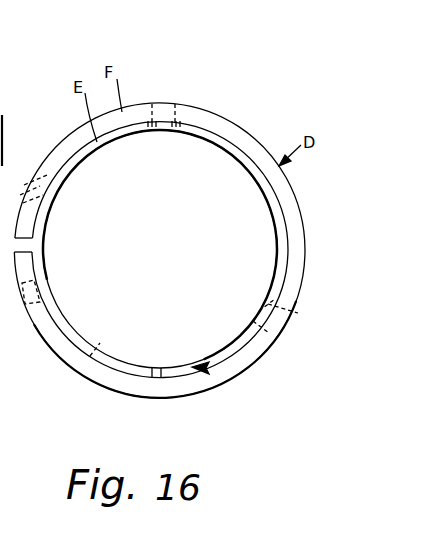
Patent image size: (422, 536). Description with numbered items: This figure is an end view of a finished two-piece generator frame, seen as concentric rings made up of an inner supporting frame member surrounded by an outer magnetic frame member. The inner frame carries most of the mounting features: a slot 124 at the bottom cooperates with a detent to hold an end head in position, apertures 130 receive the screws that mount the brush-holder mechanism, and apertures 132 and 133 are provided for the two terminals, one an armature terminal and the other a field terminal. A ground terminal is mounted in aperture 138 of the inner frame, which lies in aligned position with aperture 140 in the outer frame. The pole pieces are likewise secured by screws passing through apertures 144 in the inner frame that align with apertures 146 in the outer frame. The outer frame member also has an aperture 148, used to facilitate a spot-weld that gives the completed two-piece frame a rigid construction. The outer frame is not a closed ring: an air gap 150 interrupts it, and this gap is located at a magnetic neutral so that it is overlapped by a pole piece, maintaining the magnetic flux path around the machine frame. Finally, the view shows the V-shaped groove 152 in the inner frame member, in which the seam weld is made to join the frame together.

The slot 124 is at (157, 378).
The apertures 130 is at (74, 171).
The aperture 132 is at (234, 153).
The aperture 133 is at (178, 124).
The aperture 138 is at (160, 249).
The aperture 140 is at (163, 109).
The apertures 144 is at (271, 303).
The apertures 146 is at (28, 187).
The aperture 148 is at (25, 306).
The air gap 150 is at (21, 249).
The V-shaped groove 152 is at (207, 371).